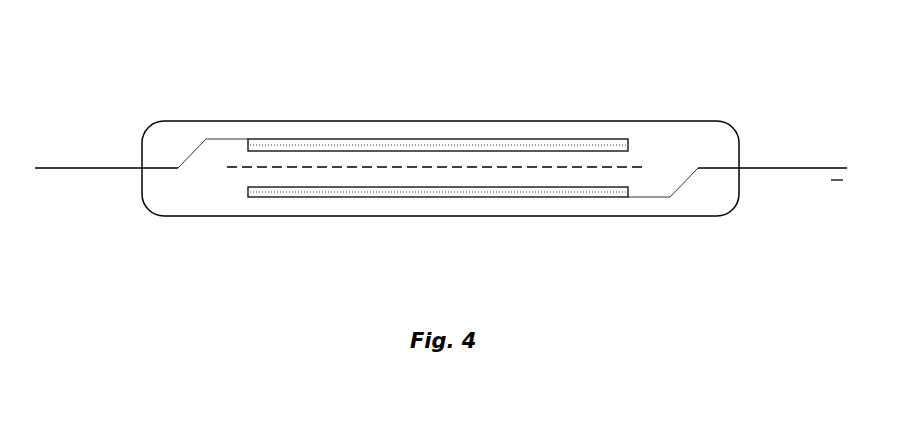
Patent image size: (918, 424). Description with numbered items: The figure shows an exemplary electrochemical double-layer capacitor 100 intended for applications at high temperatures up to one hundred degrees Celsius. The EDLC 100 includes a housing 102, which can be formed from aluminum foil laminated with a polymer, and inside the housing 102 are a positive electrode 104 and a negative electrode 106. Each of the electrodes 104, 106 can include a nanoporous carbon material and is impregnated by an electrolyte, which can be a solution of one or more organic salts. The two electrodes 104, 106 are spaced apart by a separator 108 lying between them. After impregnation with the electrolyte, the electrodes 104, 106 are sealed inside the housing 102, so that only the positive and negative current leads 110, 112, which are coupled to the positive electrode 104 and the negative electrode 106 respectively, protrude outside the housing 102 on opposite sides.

The electrochemical double-layer capacitor 100 is at (163, 80).
The housing 102 is at (328, 120).
The positive electrode 104 is at (628, 142).
The negative electrode 106 is at (247, 196).
The separator 108 is at (227, 168).
The positive current lead 110 is at (63, 167).
The negative current lead 112 is at (773, 167).